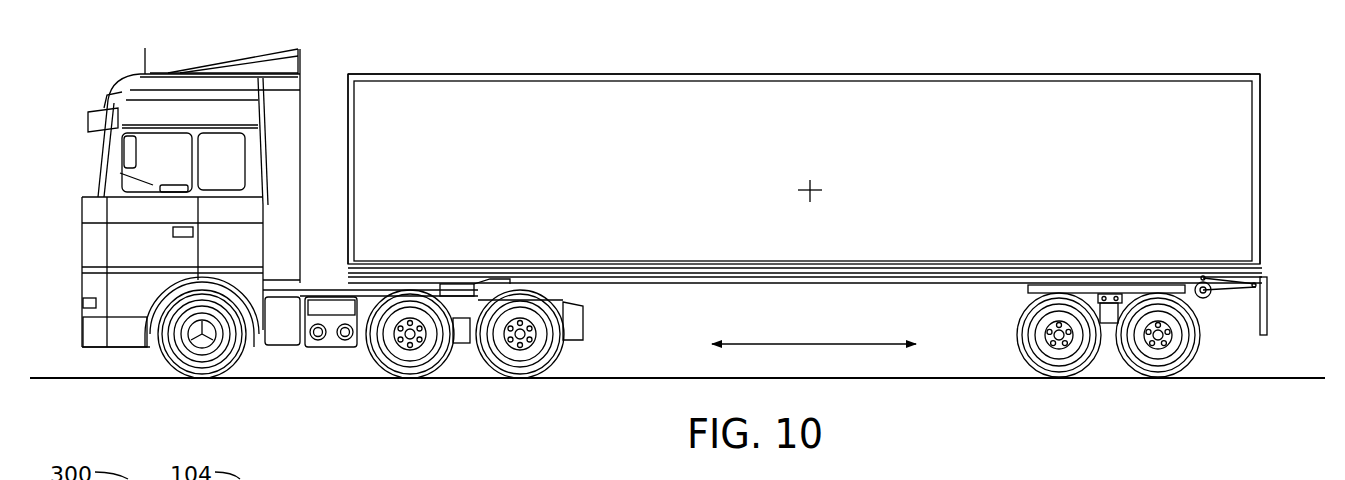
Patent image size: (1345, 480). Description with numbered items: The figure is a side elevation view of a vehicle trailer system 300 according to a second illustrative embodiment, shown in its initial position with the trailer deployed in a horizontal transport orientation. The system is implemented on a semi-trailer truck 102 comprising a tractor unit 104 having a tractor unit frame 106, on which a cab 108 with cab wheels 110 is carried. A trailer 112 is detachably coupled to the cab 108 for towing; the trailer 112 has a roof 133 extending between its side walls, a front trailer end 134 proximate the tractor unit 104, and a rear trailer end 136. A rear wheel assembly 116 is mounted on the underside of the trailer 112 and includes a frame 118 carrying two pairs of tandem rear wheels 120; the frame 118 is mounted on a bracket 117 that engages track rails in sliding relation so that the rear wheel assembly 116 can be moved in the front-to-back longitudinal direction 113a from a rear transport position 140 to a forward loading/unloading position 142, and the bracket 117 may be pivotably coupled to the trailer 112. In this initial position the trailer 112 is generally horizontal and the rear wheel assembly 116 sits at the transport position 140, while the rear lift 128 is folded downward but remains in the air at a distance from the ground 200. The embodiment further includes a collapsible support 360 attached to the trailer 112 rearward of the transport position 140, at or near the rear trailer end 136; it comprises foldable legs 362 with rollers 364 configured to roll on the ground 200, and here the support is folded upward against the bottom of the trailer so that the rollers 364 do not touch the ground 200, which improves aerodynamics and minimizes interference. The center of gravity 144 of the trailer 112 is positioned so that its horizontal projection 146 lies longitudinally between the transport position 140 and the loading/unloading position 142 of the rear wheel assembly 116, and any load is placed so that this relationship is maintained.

The semi-trailer truck 102 is at (1122, 66).
The tractor unit 104 is at (255, 50).
The tractor unit frame 106 is at (330, 349).
The cab 108 is at (285, 107).
The cab wheels 110 is at (183, 365).
The trailer 112 is at (1264, 192).
The longitudinal direction 113a is at (800, 346).
The rear wheel assembly 116 is at (1021, 300).
The bracket 117 is at (1088, 286).
The frame 118 is at (1113, 330).
The rear wheels 120 is at (1025, 365).
The rear lift 128 is at (1268, 322).
The roof 133 is at (966, 74).
The front trailer end 134 is at (345, 180).
The rear trailer end 136 is at (1260, 128).
The transport position 140 is at (1113, 293).
The loading/unloading position 142 is at (664, 283).
The center of gravity 144 is at (812, 190).
The horizontal projection 146 is at (810, 283).
The ground 200 is at (1287, 378).
The vehicle trailer system 300 is at (348, 32).
The collapsible support 360 is at (1233, 310).
The foldable legs 362 is at (1232, 291).
The rollers 364 is at (1208, 297).